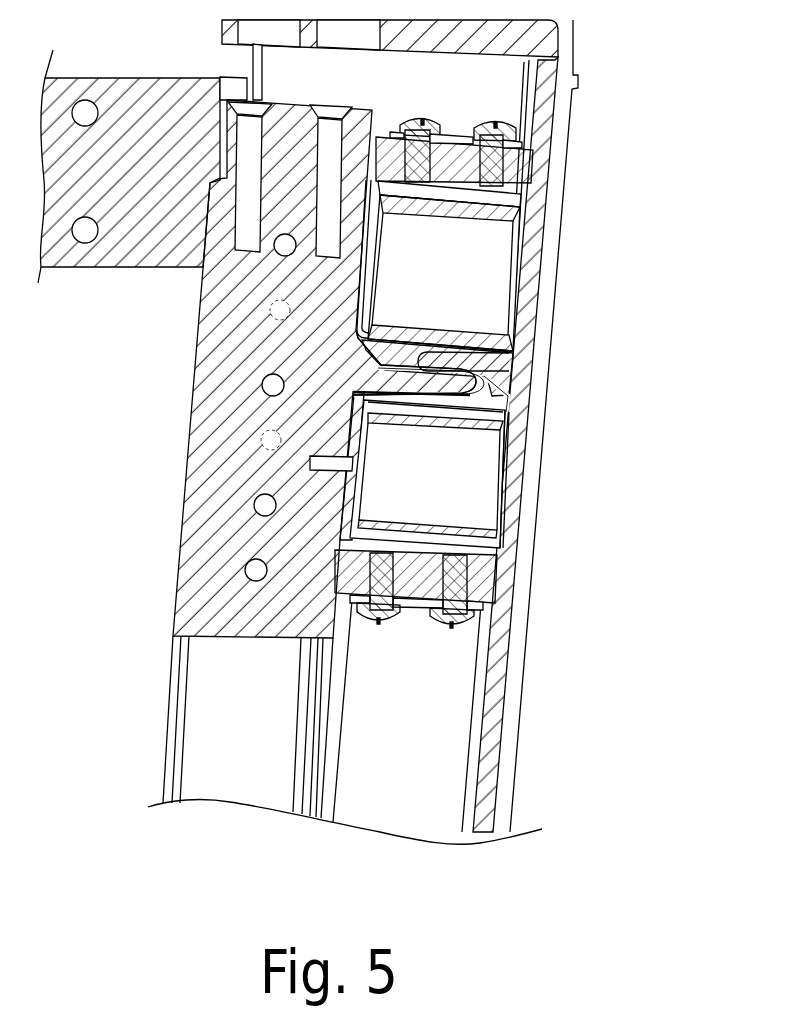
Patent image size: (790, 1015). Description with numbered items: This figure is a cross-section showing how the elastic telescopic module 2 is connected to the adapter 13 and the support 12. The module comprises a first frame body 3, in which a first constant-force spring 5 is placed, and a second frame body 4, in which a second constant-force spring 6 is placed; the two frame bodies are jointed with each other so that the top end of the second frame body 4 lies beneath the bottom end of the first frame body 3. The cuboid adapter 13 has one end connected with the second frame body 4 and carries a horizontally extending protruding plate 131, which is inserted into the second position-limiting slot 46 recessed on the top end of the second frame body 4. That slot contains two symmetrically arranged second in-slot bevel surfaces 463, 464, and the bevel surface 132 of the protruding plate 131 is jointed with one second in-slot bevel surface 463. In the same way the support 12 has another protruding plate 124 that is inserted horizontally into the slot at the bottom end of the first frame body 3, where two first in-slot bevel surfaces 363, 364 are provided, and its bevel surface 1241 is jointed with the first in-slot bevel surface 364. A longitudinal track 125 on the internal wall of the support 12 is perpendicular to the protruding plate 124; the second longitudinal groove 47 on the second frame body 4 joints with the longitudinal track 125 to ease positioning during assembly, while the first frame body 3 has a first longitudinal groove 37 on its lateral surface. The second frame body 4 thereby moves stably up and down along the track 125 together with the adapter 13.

The elastic telescopic module 2 is at (545, 152).
The first frame body 3 is at (545, 192).
The second frame body 4 is at (492, 605).
The first constant-force spring 5 is at (515, 217).
The second constant-force spring 6 is at (487, 545).
The support 12 is at (540, 290).
The adapter 13 is at (205, 523).
The first longitudinal groove 37 is at (535, 268).
The second position-limiting slot 46 is at (468, 408).
The second longitudinal groove 47 is at (520, 585).
The protruding plate 124 is at (472, 372).
The longitudinal track 125 is at (497, 705).
The protruding plate 131 is at (460, 388).
The bevel surface 132 is at (350, 383).
The first in-slot bevel surface 363 is at (365, 348).
The first in-slot bevel surface 364 is at (431, 390).
The second in-slot bevel surface 463 is at (411, 394).
The second in-slot bevel surface 464 is at (478, 455).
The bevel surface 1241 is at (500, 333).